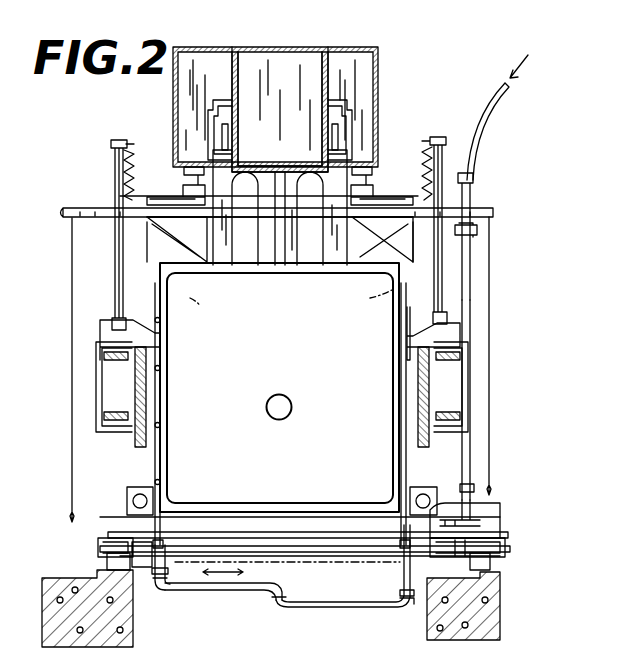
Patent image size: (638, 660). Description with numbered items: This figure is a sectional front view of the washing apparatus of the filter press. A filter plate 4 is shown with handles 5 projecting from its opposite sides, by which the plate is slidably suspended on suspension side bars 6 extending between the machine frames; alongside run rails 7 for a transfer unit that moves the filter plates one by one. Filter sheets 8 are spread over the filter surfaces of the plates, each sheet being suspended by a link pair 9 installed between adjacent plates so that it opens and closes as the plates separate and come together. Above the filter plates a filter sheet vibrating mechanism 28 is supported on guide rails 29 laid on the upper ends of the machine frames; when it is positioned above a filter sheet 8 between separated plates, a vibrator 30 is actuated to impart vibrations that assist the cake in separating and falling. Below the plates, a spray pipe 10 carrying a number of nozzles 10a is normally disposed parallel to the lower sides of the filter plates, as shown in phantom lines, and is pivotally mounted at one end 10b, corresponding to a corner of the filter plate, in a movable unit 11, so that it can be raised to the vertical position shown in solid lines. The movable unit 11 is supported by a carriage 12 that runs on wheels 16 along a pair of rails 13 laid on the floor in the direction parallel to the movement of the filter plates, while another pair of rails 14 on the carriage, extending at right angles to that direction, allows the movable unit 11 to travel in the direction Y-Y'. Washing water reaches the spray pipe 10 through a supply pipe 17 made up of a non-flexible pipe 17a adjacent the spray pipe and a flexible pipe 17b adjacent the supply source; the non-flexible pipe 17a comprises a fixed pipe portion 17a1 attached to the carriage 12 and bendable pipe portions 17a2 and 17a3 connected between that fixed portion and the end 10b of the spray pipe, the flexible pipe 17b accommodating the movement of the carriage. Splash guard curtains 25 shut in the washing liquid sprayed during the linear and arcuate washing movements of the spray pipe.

The filter plate 4 is at (283, 359).
The handle 5 is at (122, 335).
The suspension side bar 6 is at (147, 428).
The rail 7 is at (95, 355).
The filter sheet 8 is at (157, 232).
The link pair 9 is at (118, 190).
The spray pipe 10 is at (162, 355).
The nozzle 10a is at (162, 426).
The end of spray pipe 10b is at (162, 522).
The movable unit 11 is at (155, 585).
The carriage 12 is at (274, 533).
The rail 13 is at (112, 560).
The rail 14 is at (330, 546).
The wheel 16 is at (118, 548).
The supply pipe 17 is at (486, 402).
The non-flexible pipe 17a is at (478, 435).
The fixed pipe portion 17a1 is at (490, 510).
The bendable pipe portion 17a2 is at (356, 607).
The bendable pipe portion 17a3 is at (210, 590).
The flexible pipe 17b is at (483, 122).
The splash guard curtain 25 is at (72, 352).
The filter sheet vibrating mechanism 28 is at (276, 40).
The guide rail 29 is at (210, 118).
The vibrator 30 is at (186, 192).